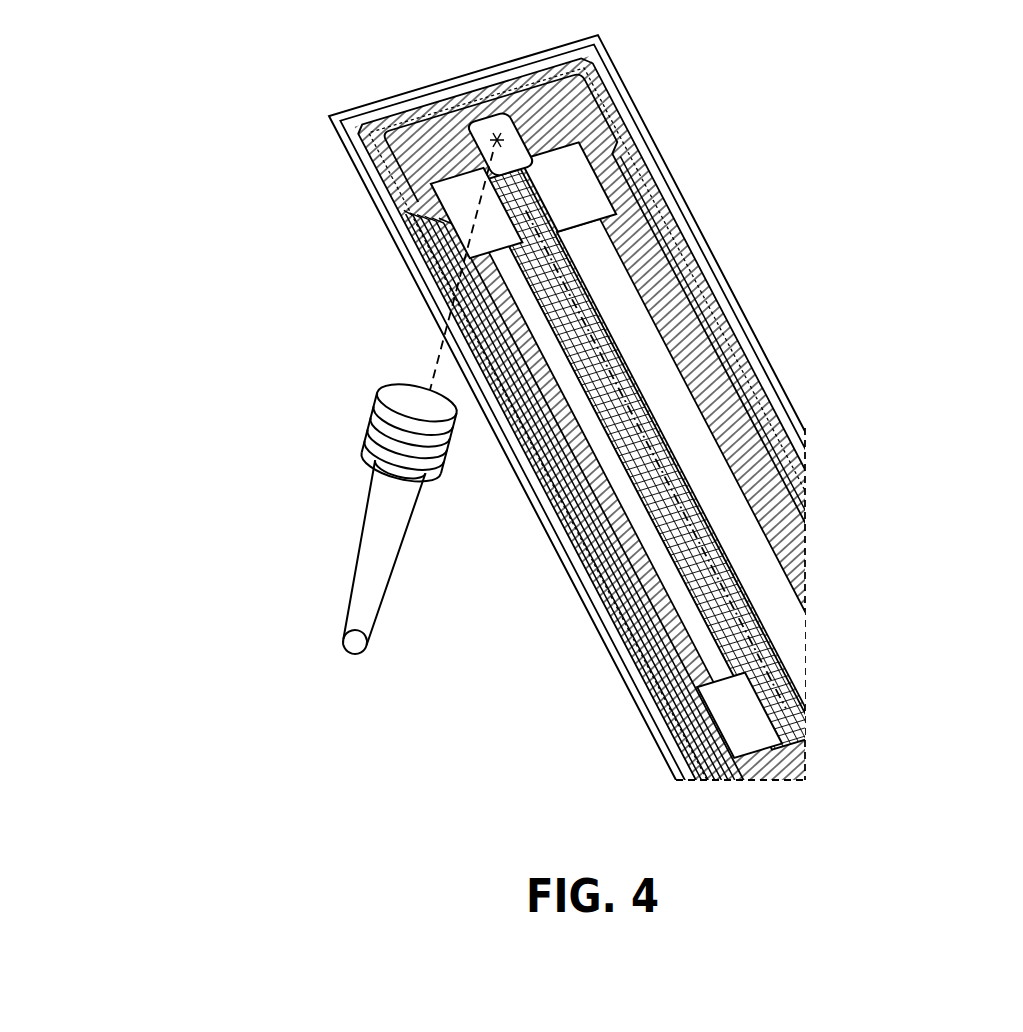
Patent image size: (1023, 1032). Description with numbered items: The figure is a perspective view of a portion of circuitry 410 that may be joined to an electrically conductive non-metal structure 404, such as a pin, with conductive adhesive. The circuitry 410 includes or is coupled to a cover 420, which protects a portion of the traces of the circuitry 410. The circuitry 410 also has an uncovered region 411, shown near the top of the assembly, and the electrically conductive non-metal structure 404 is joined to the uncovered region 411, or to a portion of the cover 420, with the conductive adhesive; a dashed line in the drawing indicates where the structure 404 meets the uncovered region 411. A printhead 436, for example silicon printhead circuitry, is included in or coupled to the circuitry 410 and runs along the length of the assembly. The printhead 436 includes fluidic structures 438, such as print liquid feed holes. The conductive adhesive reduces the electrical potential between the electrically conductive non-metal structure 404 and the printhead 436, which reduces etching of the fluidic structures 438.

The circuitry 410 is at (392, 98).
The cover 420 is at (408, 147).
The uncovered region 411 is at (440, 162).
The printhead 436 is at (608, 307).
The fluidic structures 438 is at (597, 340).
The electrically conductive non-metal structure 404 is at (370, 518).